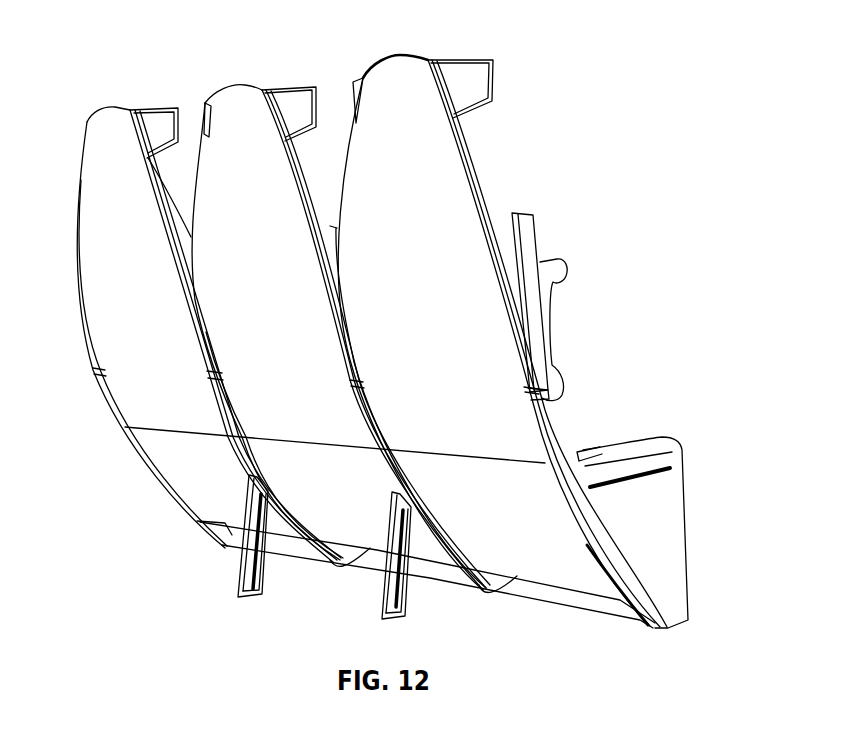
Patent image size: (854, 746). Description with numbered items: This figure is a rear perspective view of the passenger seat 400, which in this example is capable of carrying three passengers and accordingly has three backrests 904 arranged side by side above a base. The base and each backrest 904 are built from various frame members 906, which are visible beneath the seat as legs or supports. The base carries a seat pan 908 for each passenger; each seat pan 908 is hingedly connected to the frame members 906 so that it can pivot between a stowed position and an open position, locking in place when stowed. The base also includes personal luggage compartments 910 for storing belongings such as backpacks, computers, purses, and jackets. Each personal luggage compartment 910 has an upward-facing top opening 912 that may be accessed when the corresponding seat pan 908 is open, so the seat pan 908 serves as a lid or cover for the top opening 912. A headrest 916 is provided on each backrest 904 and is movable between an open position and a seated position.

The passenger seat 400 is at (677, 43).
The backrest 904 is at (80, 174).
The frame members 906 is at (400, 594).
The seat pan 908 is at (563, 268).
The personal luggage compartment 910 is at (667, 498).
The top opening 912 is at (585, 450).
The headrest 916 is at (153, 123).